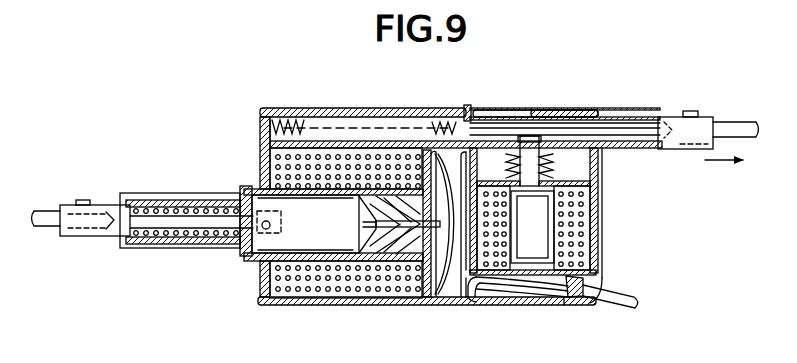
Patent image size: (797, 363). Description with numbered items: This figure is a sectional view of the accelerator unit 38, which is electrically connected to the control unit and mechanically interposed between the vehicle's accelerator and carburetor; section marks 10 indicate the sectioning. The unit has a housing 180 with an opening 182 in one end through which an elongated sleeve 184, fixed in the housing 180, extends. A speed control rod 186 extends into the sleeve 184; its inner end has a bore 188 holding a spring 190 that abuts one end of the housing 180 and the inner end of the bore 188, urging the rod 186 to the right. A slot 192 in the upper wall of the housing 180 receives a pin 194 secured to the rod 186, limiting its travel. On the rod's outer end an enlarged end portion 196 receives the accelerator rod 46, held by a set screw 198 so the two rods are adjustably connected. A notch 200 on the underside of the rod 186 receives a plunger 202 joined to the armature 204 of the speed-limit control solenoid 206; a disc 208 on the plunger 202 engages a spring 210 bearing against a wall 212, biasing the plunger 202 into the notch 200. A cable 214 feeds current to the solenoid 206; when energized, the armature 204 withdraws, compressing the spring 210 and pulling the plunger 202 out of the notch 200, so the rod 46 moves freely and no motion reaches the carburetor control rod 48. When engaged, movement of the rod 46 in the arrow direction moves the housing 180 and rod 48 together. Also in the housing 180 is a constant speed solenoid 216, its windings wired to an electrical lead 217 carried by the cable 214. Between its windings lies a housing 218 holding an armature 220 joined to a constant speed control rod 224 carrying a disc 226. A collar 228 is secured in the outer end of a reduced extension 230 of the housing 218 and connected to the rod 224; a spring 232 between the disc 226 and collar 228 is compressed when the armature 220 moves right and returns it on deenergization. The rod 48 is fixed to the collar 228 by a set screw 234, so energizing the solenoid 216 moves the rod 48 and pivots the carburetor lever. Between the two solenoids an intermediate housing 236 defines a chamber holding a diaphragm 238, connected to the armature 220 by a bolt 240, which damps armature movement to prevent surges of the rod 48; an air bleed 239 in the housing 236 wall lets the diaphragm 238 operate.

The section line 10 is at (262, 96).
The accelerator unit 38 is at (474, 82).
The accelerator rod 46 is at (726, 114).
The carburetor control rod 48 is at (30, 203).
The housing 180 is at (524, 297).
The opening 182 is at (596, 143).
The sleeve 184 is at (614, 108).
The speed control rod 186 is at (590, 115).
The bore 188 is at (346, 100).
The spring 190 is at (284, 100).
The slot 192 is at (502, 102).
The pin 194 is at (459, 97).
The enlarged end portion 196 is at (662, 109).
The set screw 198 is at (686, 103).
The notch 200 is at (523, 127).
The plunger 202 is at (596, 160).
The armature 204 is at (596, 236).
The speed-limit control solenoid 206 is at (612, 266).
The disc 208 is at (513, 165).
The spring 210 is at (596, 180).
The wall 212 is at (590, 206).
The cable 214 is at (614, 298).
The constant speed solenoid 216 is at (316, 297).
The electrical lead 217 is at (552, 290).
The housing 218 is at (250, 160).
The armature 220 is at (252, 250).
The constant speed control rod 224 is at (156, 240).
The disc 226 is at (234, 236).
The collar 228 is at (92, 200).
The reduced extension 230 is at (154, 203).
The spring 232 is at (130, 238).
The set screw 234 is at (72, 192).
The intermediate housing 236 is at (458, 298).
The diaphragm 238 is at (433, 297).
The air bleed 239 is at (470, 284).
The bolt 240 is at (436, 218).